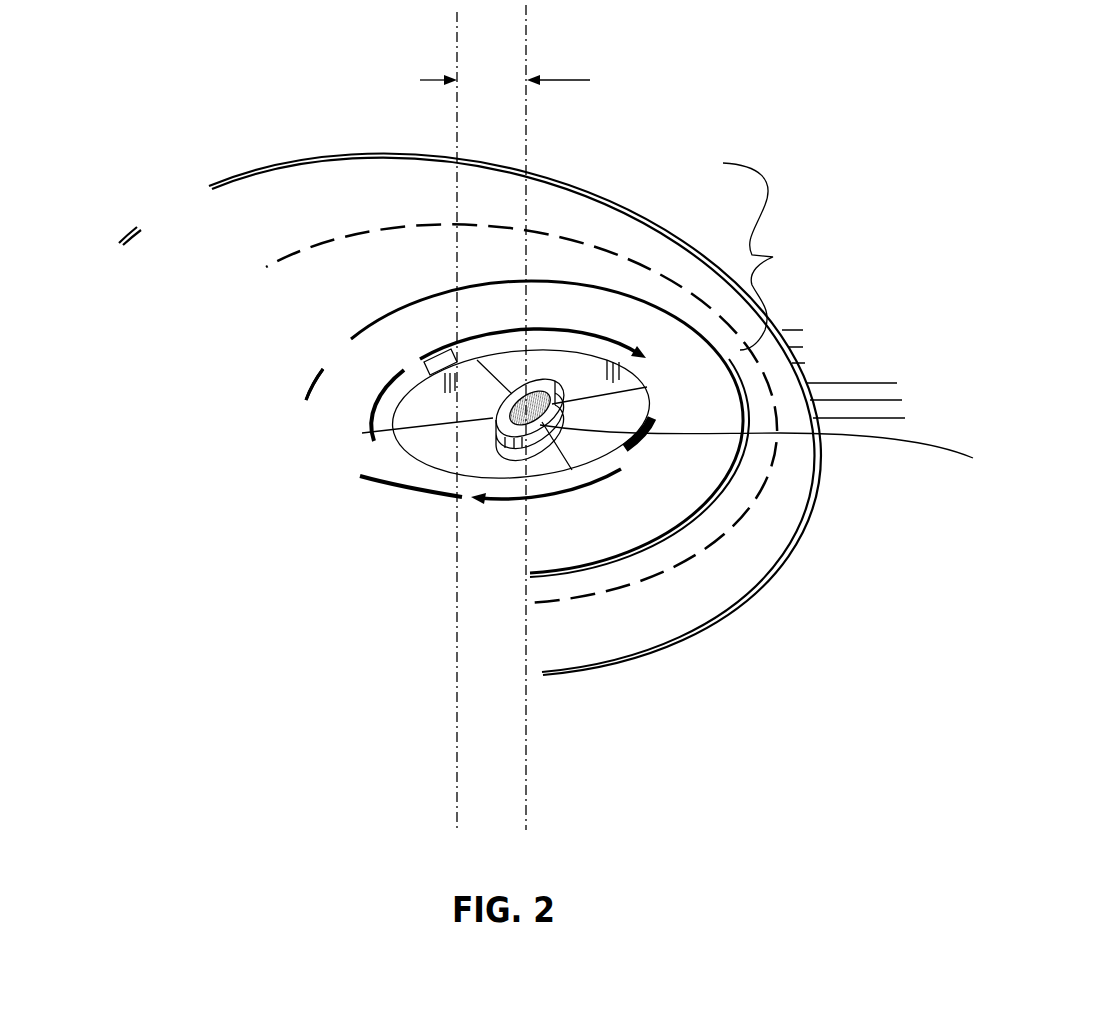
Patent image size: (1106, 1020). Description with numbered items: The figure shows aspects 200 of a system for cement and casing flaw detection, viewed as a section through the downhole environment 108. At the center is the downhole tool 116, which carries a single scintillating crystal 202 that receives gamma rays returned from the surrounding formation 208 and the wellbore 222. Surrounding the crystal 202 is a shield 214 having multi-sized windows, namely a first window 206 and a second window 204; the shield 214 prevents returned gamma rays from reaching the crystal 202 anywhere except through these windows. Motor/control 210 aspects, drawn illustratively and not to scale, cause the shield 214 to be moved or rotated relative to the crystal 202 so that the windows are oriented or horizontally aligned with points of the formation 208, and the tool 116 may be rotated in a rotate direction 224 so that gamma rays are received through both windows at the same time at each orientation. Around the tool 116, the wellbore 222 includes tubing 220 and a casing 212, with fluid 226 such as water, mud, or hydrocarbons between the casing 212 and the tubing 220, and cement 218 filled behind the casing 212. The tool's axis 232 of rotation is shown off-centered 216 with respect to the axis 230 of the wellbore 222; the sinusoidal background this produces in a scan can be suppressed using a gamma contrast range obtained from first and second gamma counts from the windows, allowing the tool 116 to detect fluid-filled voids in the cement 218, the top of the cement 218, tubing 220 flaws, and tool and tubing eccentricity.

The aspects of a system for cement and casing flaw detection 200 is at (974, 68).
The axis of the wellbore 230 is at (456, 133).
The axis of rotation of the tool 232 is at (535, 135).
The off-center 216 is at (588, 56).
The wellbore 222 is at (200, 199).
The cement 218 is at (377, 199).
The casing 212 is at (305, 294).
The fluid 226 is at (437, 299).
The tubing 220 is at (358, 367).
The formation 208 is at (943, 274).
The downhole environment 108 is at (1073, 339).
The downhole tool 116 is at (428, 459).
The rotate direction 224 is at (490, 512).
The shield 214 is at (400, 487).
The second window 204 is at (398, 382).
The first window 206 is at (640, 455).
The single scintillating crystal 202 is at (490, 447).
The motor/control 210 is at (794, 474).